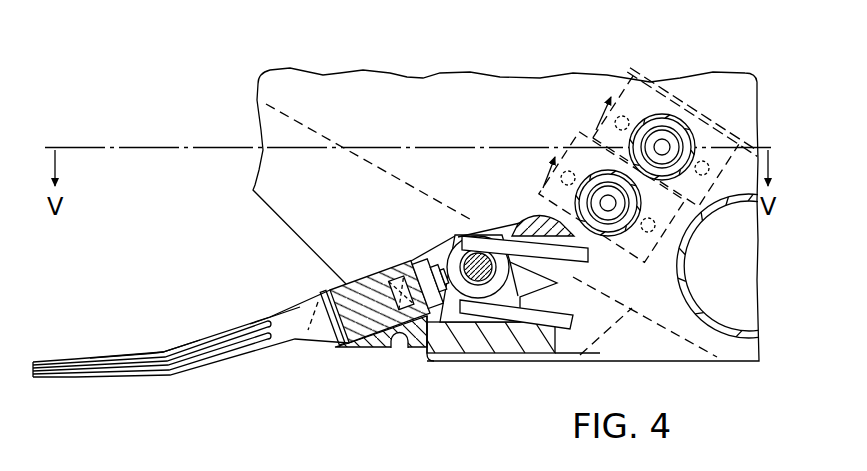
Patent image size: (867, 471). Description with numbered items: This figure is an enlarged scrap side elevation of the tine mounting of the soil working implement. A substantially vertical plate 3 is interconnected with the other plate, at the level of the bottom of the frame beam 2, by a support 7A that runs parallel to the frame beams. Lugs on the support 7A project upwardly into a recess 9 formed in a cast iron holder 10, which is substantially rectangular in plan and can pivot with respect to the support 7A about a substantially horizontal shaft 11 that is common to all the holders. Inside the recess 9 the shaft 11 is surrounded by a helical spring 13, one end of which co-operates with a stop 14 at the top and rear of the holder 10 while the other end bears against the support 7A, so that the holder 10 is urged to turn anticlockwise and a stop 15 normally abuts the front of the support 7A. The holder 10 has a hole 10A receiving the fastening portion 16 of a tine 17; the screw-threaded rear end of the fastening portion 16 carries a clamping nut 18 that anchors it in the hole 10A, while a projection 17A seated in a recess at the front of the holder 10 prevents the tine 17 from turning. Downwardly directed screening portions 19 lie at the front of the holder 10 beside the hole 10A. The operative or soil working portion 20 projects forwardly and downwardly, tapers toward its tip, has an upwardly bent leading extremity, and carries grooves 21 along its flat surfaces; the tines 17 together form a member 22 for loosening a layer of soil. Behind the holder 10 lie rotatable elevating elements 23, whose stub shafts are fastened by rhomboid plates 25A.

The frame beam 2 is at (680, 292).
The substantially vertical plates 3 is at (379, 87).
The support 7A is at (497, 345).
The recesses 9 is at (436, 262).
The holder 10 is at (351, 274).
The hole 10A is at (407, 348).
The shaft 11 is at (480, 252).
The helical spring 13 is at (463, 233).
The stop 14 is at (542, 216).
The stop 15 is at (428, 354).
The fastening portion 16 is at (362, 343).
The tine 17 is at (270, 312).
The projection 17A is at (329, 291).
The clamping nut 18 is at (420, 264).
The screening portions 19 is at (318, 345).
The operative or soil working portion 20 is at (137, 357).
The grooves 21 is at (210, 354).
The member for loosening a layer of soil 22 is at (71, 358).
The rotatable elevating elements 23 is at (718, 108).
The rhomboid plates 25A is at (592, 140).